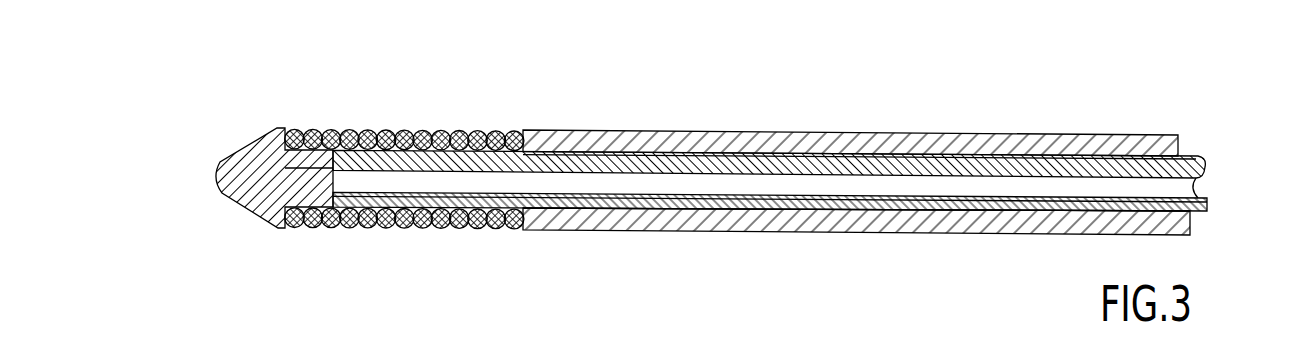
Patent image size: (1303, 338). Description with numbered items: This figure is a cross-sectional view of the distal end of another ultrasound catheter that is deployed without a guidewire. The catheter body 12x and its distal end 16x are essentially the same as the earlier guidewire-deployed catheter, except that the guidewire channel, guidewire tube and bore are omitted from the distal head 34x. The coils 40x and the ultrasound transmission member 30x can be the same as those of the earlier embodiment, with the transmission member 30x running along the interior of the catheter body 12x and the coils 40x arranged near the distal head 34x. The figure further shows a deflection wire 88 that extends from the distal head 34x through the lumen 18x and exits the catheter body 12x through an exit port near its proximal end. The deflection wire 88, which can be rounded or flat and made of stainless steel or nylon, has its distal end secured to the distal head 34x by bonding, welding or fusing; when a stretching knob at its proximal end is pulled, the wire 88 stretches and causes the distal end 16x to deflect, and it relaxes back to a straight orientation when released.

The catheter body 12x is at (737, 105).
The distal end 16x is at (353, 245).
The lumen 18x is at (803, 185).
The ultrasound transmission member 30x is at (1196, 160).
The distal head 34x is at (247, 162).
The coils 40x is at (390, 128).
The deflection wire 88 is at (1015, 203).